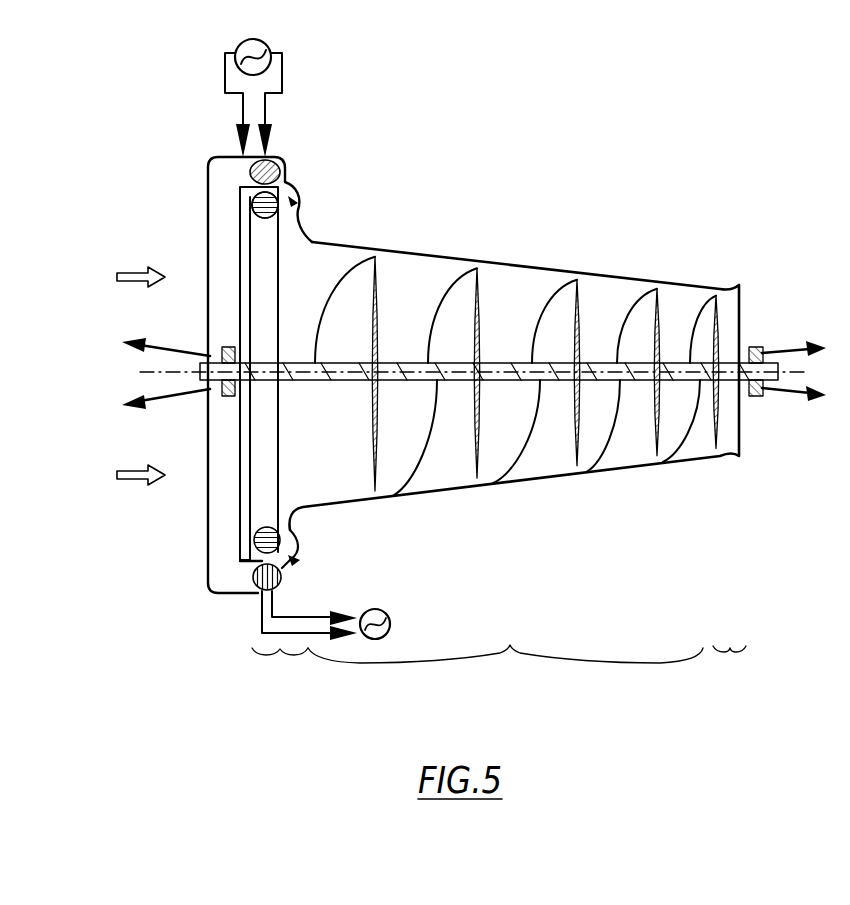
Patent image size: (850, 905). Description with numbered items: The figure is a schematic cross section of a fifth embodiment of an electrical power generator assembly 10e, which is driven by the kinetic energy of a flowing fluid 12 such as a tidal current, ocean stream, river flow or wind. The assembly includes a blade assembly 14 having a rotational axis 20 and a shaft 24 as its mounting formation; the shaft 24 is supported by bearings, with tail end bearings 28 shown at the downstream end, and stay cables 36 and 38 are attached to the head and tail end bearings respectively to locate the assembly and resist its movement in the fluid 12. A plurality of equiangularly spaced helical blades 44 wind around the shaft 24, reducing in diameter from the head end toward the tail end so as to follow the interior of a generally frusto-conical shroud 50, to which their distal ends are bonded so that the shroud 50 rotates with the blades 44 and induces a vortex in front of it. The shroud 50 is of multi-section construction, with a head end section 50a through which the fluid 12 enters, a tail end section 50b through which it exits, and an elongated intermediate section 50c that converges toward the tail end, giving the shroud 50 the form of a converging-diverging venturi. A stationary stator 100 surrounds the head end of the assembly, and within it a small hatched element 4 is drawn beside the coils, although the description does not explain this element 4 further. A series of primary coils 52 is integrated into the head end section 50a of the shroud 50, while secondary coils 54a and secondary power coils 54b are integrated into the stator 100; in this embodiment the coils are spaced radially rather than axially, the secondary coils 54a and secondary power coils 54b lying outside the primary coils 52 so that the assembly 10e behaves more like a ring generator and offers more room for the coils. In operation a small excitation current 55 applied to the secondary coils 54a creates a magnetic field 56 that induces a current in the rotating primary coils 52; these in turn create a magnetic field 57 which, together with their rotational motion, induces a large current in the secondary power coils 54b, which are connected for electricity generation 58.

The electrical power generator assembly 10e is at (452, 133).
The stator 100 is at (208, 222).
The shaft 24 is at (298, 362).
The frusto-conical shroud 50 is at (422, 252).
The blade assembly 14 is at (534, 270).
The rotational axis 20 is at (157, 372).
The stay cables 36 is at (190, 345).
The tail end bearings 28 is at (756, 398).
The stay cables 38 is at (793, 343).
The flowing fluid 12 is at (120, 272).
The helical blades 44 is at (443, 335).
The excitation current 55 is at (283, 60).
The secondary coils 54a is at (277, 161).
The seal 4 is at (268, 218).
The primary coils 52 is at (246, 200).
The magnetic field 56 is at (290, 193).
The magnetic field 57 is at (300, 546).
The secondary power coils 54b is at (254, 573).
The electricity generation 58 is at (390, 609).
The head end section 50a is at (280, 673).
The intermediate section 50c is at (505, 672).
The tail end section 50b is at (728, 672).